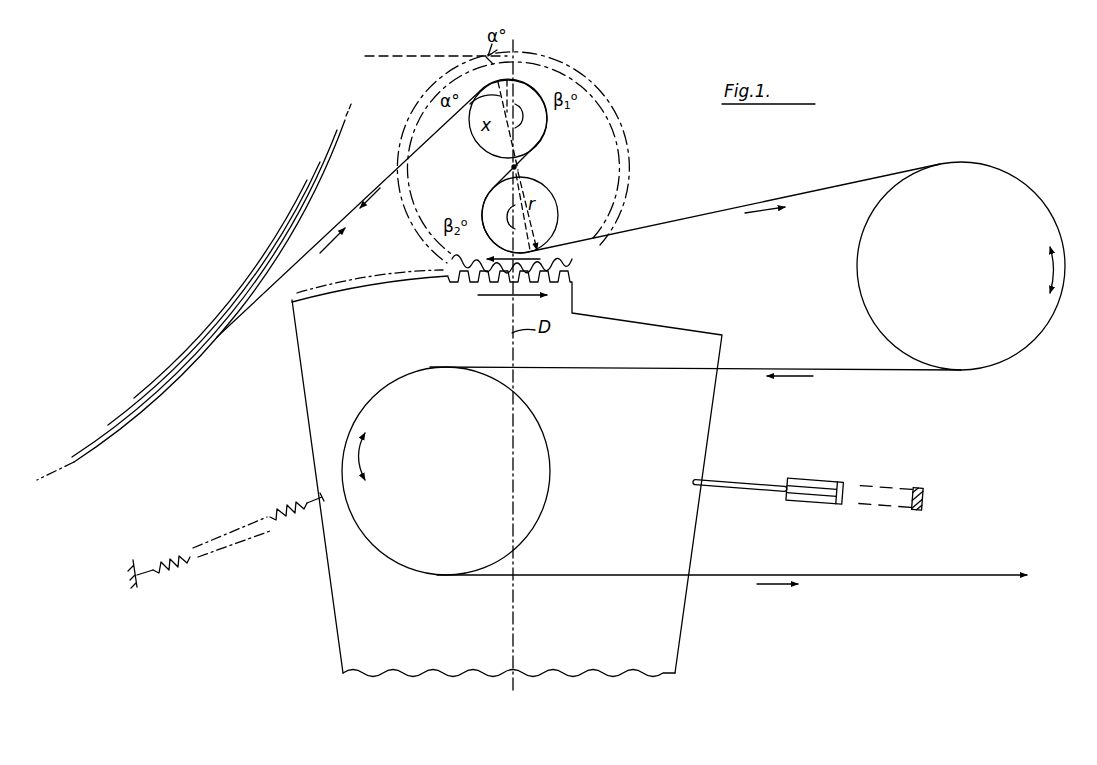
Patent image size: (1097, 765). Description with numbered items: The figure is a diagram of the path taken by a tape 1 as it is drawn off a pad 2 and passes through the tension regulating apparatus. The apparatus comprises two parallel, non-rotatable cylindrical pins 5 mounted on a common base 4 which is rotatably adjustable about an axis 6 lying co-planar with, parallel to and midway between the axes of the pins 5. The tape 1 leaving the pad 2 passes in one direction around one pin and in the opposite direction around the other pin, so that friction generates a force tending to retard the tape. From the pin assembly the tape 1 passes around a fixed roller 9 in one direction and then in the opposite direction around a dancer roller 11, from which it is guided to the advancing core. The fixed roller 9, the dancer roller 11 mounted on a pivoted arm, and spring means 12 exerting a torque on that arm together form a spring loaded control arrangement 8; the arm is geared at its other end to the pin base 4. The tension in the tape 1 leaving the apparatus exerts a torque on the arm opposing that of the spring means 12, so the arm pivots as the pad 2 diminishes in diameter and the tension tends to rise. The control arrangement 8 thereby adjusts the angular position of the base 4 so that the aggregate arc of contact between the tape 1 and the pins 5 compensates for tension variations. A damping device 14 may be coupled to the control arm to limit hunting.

The tape 1 is at (304, 262).
The pad 2 is at (180, 358).
The base 4 is at (626, 165).
The cylindrical pins 5 is at (546, 122).
The axis 6 is at (518, 166).
The spring loaded control arrangement 8 is at (322, 580).
The fixed roller 9 is at (858, 286).
The dancer roller 11 is at (543, 457).
The spring means 12 is at (210, 533).
The damping device 14 is at (813, 502).